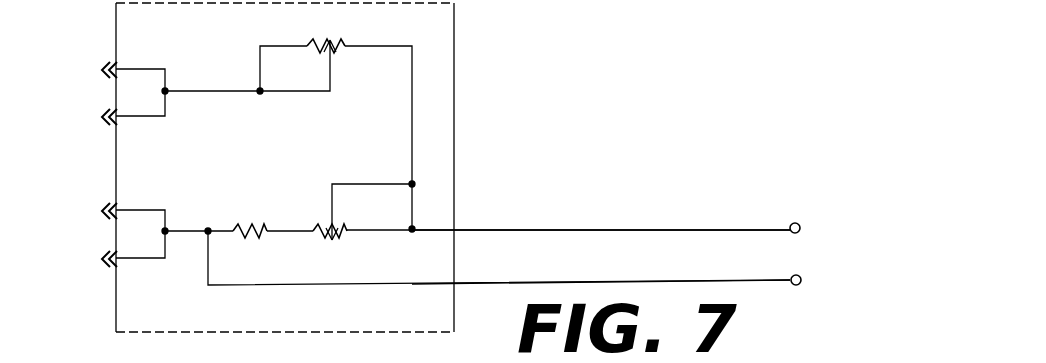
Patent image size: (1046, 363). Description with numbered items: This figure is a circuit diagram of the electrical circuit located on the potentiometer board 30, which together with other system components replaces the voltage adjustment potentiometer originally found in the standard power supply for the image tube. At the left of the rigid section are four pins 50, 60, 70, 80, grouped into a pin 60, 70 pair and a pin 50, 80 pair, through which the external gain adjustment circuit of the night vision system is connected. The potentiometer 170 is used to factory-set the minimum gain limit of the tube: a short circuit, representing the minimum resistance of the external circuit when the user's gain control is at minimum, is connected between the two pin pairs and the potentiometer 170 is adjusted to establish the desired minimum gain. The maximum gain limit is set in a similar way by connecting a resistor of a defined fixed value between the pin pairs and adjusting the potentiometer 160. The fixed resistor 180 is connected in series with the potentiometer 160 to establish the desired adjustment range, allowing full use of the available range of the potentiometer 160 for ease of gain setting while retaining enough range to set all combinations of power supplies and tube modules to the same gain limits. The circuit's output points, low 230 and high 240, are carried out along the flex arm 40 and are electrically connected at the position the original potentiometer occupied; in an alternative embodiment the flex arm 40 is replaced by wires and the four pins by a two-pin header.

The potentiometer board 30 is at (454, 83).
The flex arm 40 is at (608, 267).
The pin 50 is at (100, 211).
The pin 60 is at (100, 117).
The pin 70 is at (100, 70).
The pin 80 is at (100, 259).
The potentiometer 160 is at (368, 184).
The potentiometer 170 is at (332, 44).
The fixed resistor 180 is at (250, 222).
The low point 230 is at (800, 225).
The high point 240 is at (801, 277).